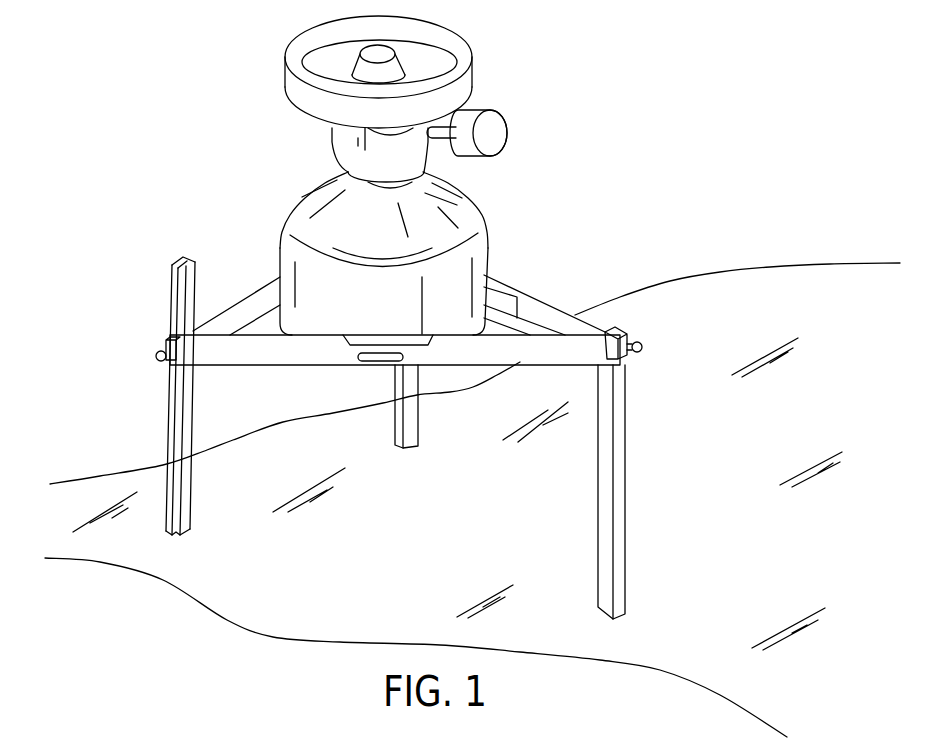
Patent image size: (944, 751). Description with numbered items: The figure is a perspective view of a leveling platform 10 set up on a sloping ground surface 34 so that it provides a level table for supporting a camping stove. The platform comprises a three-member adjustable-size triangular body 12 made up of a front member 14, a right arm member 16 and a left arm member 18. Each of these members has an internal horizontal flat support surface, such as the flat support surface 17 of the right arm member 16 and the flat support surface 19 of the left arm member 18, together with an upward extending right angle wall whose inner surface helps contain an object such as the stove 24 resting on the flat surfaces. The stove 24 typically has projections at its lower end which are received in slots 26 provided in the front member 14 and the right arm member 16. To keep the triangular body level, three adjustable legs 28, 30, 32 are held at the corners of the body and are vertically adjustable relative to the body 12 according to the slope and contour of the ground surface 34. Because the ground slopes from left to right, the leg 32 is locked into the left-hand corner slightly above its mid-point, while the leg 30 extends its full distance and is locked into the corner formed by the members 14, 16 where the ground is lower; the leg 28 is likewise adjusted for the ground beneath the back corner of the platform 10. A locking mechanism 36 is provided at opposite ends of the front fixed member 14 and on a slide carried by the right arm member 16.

The leveling platform 10 is at (418, 175).
The triangular body 12 is at (384, 414).
The front member 14 is at (278, 352).
The right arm member 16 is at (561, 316).
The flat support surface 17 is at (517, 323).
The left arm member 18 is at (223, 318).
The flat support surface 19 is at (267, 320).
The stove 24 is at (343, 235).
The slots 26 is at (383, 361).
The leg 28 is at (407, 422).
The leg 30 is at (602, 470).
The leg 32 is at (185, 494).
The ground surface 34 is at (728, 542).
The locking mechanism 36 is at (157, 358).